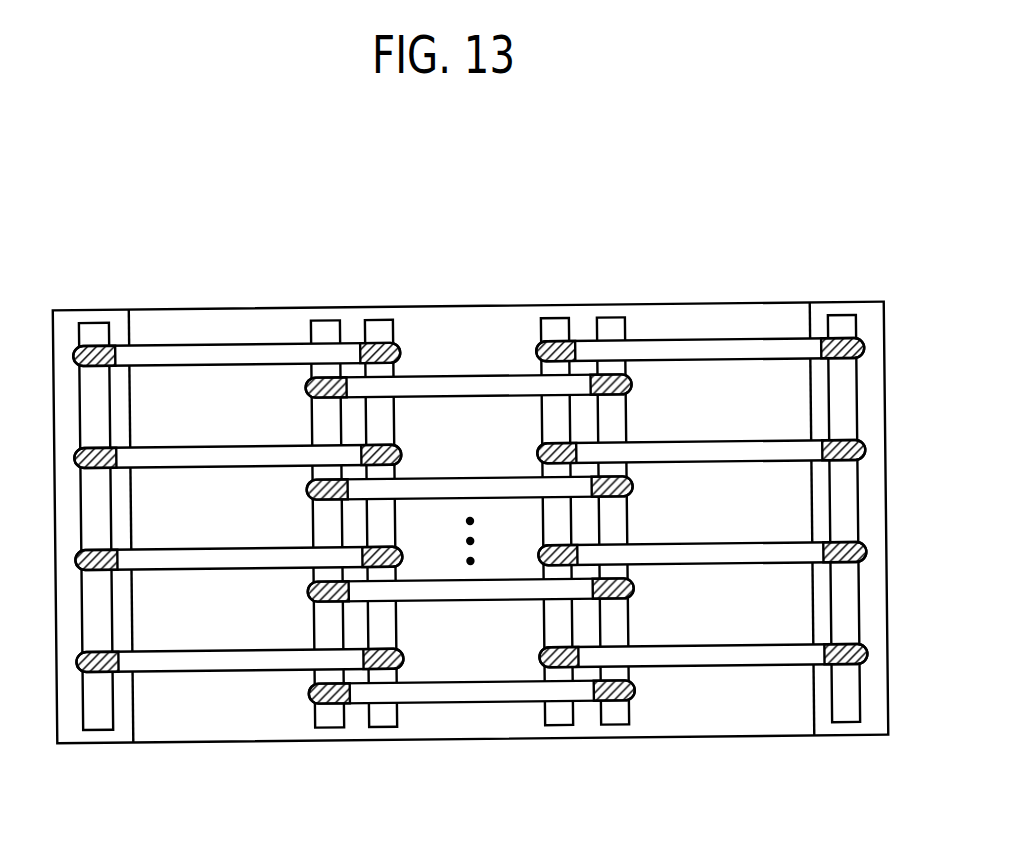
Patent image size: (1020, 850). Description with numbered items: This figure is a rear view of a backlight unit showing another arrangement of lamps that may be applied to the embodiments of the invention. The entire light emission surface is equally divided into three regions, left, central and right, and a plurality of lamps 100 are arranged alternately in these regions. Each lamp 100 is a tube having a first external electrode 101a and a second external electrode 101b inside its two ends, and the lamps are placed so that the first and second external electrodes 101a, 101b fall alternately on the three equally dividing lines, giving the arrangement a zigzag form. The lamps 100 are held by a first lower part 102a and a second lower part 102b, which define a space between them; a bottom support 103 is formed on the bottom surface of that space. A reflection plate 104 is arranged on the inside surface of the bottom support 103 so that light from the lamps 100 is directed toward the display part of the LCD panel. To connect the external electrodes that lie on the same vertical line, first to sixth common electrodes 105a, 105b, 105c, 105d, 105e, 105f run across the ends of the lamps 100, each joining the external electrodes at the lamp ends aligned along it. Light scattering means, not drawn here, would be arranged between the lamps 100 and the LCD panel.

The lamp 100 is at (233, 354).
The first external electrode 101a is at (90, 353).
The second external electrode 101b is at (378, 321).
The first lower part 102a is at (70, 318).
The second lower part 102b is at (870, 316).
The bottom support 103 is at (470, 541).
The reflection plate 104 is at (473, 325).
The first common electrode 105a is at (103, 726).
The second common electrode 105b is at (328, 727).
The third common electrode 105c is at (381, 727).
The fourth common electrode 105d is at (558, 723).
The fifth common electrode 105e is at (618, 722).
The sixth common electrode 105f is at (851, 722).